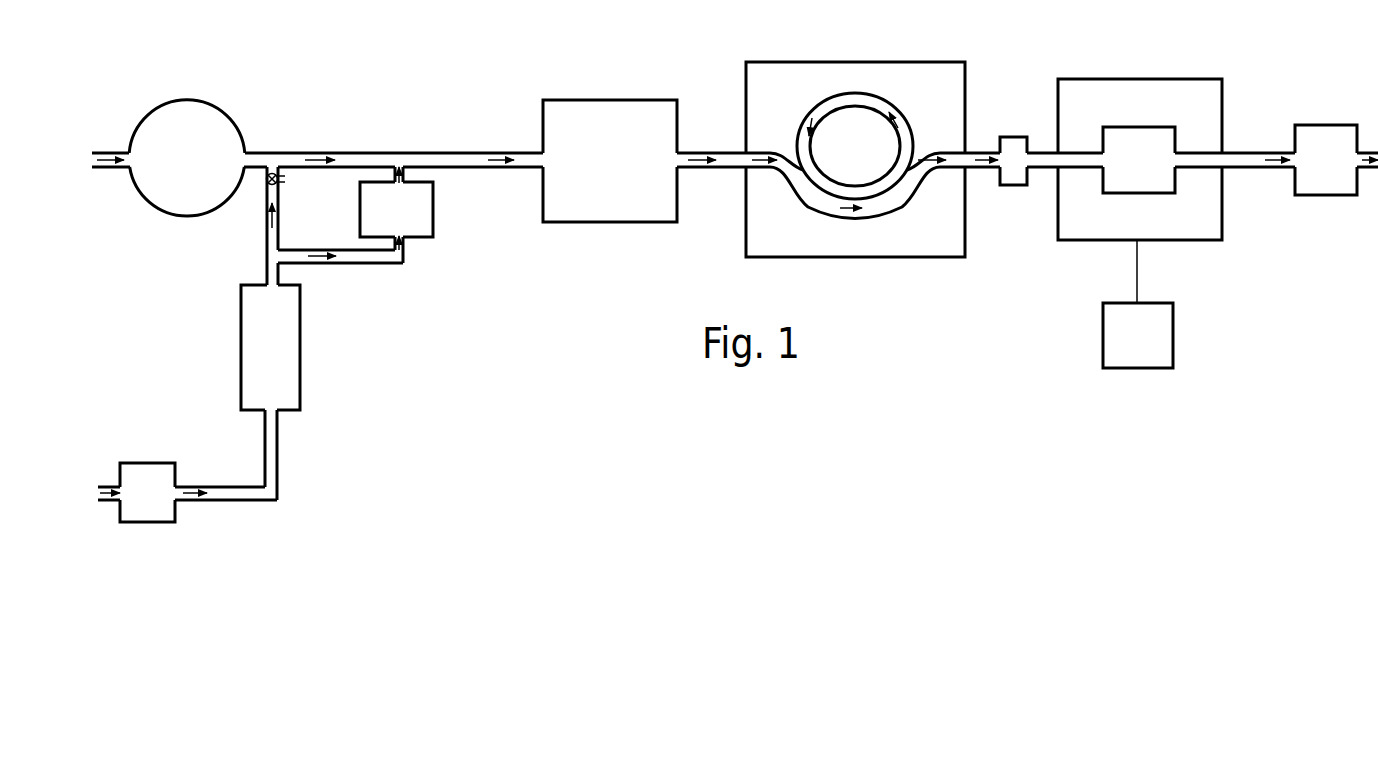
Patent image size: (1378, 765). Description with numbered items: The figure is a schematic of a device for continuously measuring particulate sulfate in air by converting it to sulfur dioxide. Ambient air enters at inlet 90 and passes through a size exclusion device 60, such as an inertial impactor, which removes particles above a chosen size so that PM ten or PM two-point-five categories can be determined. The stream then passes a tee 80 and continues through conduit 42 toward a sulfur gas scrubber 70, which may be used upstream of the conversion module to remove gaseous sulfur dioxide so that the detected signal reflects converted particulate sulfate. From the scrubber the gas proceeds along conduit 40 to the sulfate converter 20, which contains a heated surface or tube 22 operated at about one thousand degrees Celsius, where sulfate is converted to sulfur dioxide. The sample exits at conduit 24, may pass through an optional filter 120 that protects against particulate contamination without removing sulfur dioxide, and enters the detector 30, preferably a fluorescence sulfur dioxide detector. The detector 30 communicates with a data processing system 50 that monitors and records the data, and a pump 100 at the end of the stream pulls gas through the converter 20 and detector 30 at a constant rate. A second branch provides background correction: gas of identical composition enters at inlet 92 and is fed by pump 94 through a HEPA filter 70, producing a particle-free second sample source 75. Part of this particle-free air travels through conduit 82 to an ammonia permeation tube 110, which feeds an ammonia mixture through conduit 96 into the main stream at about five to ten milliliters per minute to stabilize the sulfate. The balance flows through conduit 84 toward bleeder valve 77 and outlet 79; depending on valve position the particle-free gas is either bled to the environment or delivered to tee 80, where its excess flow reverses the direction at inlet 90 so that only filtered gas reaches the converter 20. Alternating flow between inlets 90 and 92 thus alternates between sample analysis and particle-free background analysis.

The sulfate converter 20 is at (840, 62).
The tube 22 is at (895, 108).
The conduit 24 is at (974, 150).
The detector 30 is at (1110, 79).
The conduit from filter 40 is at (688, 150).
The conduit 42 is at (352, 152).
The data processing system 50 is at (1174, 320).
The size exclusion device 60 is at (180, 100).
The HEPA filter / sulfur gas scrubber 70 is at (595, 100).
The second sample source 75 is at (266, 186).
The bleeder valve 77 is at (279, 186).
The bleeder valve / outlet 79 is at (279, 180).
The tee 80 is at (271, 152).
The conduit 82 is at (365, 265).
The conduit 84 is at (265, 248).
The inlet / sample source 90 is at (93, 160).
The inlet 92 is at (92, 493).
The pump 94 is at (141, 523).
The conduit 96 is at (406, 172).
The pump 100 is at (1310, 125).
The ammonia permeation tube 110 is at (434, 220).
The filter 120 is at (1010, 186).